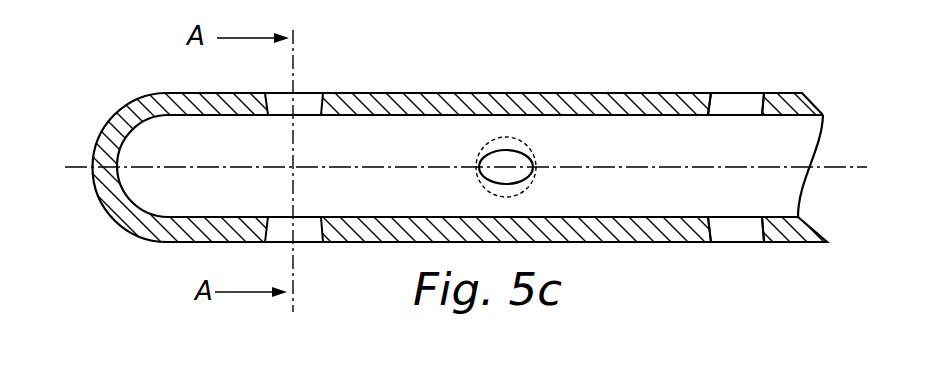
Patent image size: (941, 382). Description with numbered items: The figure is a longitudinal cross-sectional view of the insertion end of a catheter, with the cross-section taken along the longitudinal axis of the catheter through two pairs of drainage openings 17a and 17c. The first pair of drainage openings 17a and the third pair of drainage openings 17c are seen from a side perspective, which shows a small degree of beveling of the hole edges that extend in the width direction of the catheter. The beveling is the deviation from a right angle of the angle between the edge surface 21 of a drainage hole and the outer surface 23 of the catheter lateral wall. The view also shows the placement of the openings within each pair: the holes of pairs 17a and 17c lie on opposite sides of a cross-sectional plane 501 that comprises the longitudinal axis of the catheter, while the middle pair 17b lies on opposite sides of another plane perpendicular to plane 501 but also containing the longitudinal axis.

The first pair of drainage openings 17a is at (295, 93).
The middle pair of drainage openings 17b is at (506, 162).
The third pair of drainage openings 17c is at (743, 100).
The edge surface 21 is at (710, 93).
The outer surface 23 is at (572, 93).
The cross-sectional plane 501 is at (838, 165).